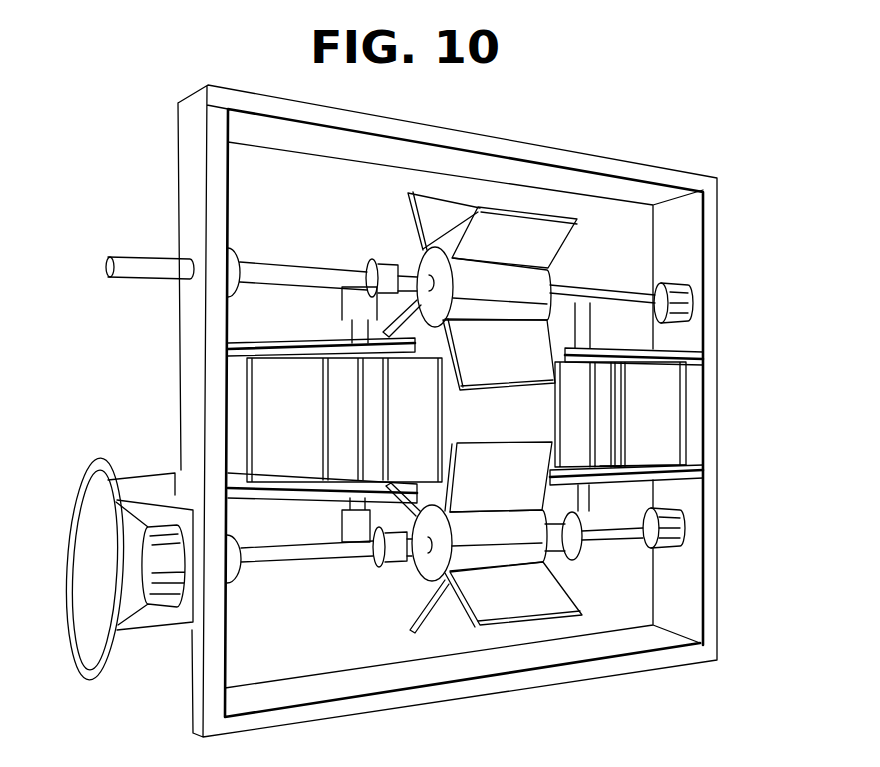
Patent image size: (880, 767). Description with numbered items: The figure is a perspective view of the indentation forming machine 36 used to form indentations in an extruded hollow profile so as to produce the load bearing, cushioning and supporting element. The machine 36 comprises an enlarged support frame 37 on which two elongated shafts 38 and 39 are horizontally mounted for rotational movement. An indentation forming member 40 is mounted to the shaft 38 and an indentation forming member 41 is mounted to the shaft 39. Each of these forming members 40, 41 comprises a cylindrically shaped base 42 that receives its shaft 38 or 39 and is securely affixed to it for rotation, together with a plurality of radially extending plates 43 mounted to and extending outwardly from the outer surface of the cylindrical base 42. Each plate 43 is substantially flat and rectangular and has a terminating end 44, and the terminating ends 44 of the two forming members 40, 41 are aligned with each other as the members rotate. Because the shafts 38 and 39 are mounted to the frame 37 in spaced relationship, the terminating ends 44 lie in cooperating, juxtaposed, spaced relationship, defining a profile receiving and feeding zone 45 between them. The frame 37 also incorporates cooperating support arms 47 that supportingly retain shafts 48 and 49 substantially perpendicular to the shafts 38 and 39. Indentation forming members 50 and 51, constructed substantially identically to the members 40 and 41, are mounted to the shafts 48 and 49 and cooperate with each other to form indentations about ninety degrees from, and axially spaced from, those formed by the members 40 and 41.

The indentation forming machine 36 is at (722, 603).
The support frame 37 is at (687, 222).
The shaft 38 is at (655, 285).
The shaft 39 is at (310, 556).
The indentation forming member 40 is at (543, 200).
The indentation forming member 41 is at (590, 573).
The cylindrically shaped base 42 is at (484, 300).
The radially extending plate 43 is at (432, 217).
The terminating end 44 is at (428, 192).
The profile receiving and feeding zone 45 is at (545, 403).
The support arm 47 is at (257, 340).
The shaft 48 is at (680, 532).
The shaft 49 is at (347, 325).
The indentation forming member 50 is at (250, 432).
The indentation forming member 51 is at (652, 458).